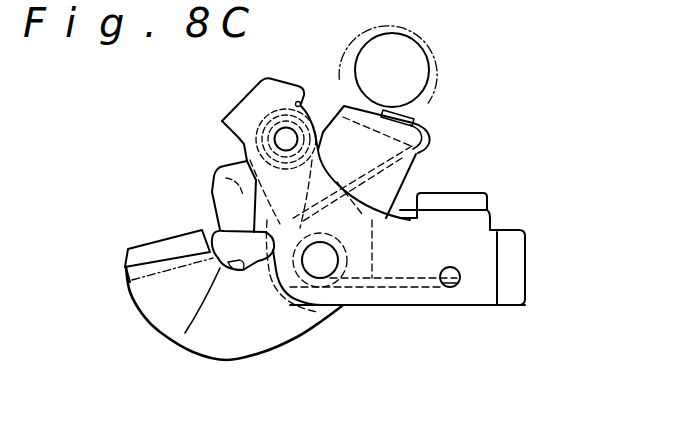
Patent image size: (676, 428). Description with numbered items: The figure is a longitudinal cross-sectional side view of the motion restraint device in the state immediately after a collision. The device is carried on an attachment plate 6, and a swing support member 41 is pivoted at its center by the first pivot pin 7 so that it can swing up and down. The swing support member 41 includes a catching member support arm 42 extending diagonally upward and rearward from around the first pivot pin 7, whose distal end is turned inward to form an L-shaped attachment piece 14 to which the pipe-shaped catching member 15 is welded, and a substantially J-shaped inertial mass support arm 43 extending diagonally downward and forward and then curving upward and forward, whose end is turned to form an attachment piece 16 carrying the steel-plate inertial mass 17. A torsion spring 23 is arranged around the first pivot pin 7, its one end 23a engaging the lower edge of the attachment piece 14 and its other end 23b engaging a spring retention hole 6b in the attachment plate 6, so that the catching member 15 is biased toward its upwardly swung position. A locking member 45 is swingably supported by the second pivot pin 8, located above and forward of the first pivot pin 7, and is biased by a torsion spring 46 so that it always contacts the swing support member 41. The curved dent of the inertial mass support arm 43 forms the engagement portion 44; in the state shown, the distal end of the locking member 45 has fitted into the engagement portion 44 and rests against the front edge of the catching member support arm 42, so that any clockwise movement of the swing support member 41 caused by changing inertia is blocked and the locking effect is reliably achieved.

The catching member 15 is at (430, 57).
The attachment piece 14 is at (344, 106).
The one end of torsion spring 23a is at (430, 124).
The catching member support arm 42 is at (378, 155).
The torsion spring 46 is at (243, 167).
The attachment plate 6 is at (460, 242).
The spring retention hole 6b is at (458, 281).
The first pivot pin 7 is at (320, 262).
The torsion spring 23 is at (403, 282).
The other end of torsion spring 23b is at (453, 287).
The second pivot pin 8 is at (285, 137).
The locking member 45 is at (251, 243).
The engagement portion 44 is at (185, 333).
The swing support member 41 is at (292, 348).
The inertial mass support arm 43 is at (163, 297).
The inertial mass 17 is at (165, 245).
The attachment piece 16 is at (150, 263).